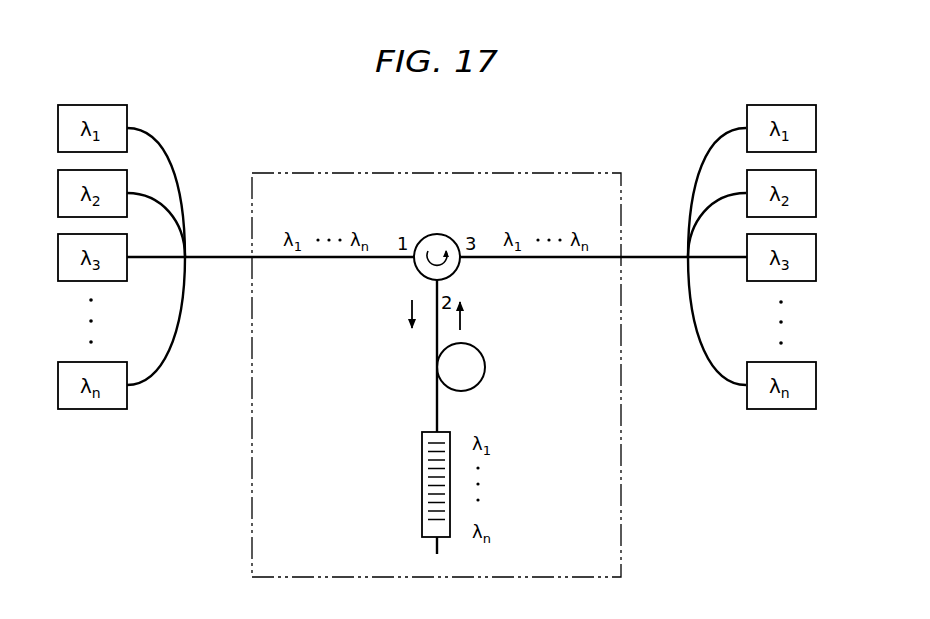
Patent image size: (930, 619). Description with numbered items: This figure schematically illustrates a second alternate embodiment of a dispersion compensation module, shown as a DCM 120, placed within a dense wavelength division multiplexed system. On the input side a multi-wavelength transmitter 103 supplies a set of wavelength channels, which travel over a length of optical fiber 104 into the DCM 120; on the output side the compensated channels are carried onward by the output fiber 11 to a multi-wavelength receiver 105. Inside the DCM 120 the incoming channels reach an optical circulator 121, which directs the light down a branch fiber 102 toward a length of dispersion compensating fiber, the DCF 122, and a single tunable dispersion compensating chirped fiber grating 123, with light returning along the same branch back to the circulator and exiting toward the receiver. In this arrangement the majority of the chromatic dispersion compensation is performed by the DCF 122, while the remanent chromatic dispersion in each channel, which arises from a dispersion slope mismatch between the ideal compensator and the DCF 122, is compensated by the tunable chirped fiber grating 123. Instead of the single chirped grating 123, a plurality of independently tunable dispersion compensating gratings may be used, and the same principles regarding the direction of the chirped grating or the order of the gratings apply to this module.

The output optical fiber / transmission line 11 is at (530, 264).
The optical fiber connecting circulator to fiber grating 102 is at (437, 410).
The multi-wavelength transmitter 103 is at (160, 141).
The length of optical fiber 104 is at (211, 255).
The multi-wavelength receiver 105 is at (708, 363).
The DCM 120 is at (572, 172).
The optical circulator 121 is at (448, 237).
The dispersion compensating fiber 122 is at (486, 363).
The tunable dispersion compensating chirped fiber grating 123 is at (410, 502).